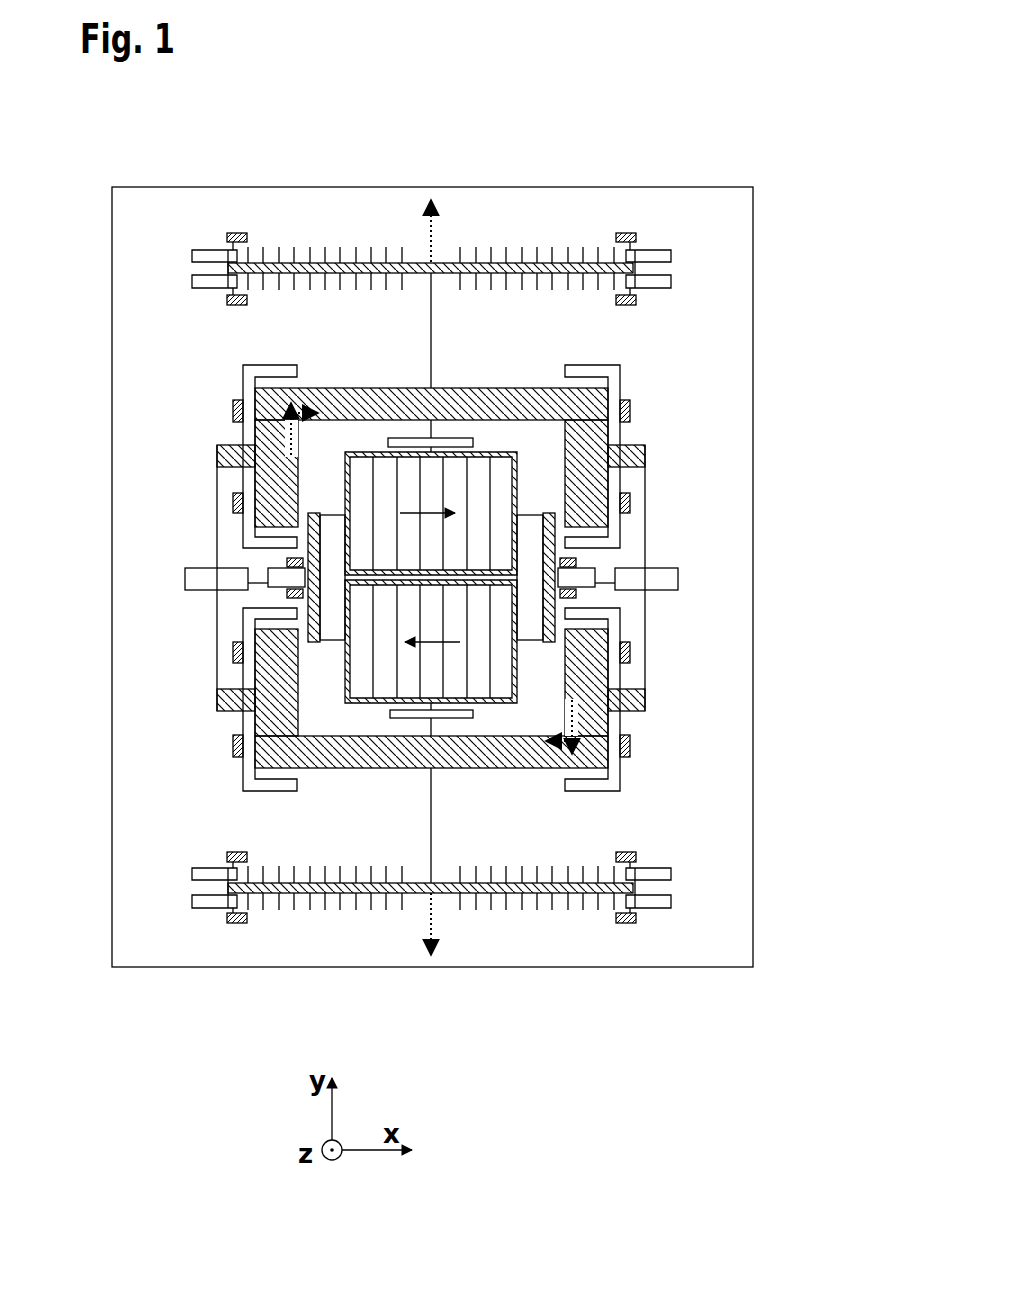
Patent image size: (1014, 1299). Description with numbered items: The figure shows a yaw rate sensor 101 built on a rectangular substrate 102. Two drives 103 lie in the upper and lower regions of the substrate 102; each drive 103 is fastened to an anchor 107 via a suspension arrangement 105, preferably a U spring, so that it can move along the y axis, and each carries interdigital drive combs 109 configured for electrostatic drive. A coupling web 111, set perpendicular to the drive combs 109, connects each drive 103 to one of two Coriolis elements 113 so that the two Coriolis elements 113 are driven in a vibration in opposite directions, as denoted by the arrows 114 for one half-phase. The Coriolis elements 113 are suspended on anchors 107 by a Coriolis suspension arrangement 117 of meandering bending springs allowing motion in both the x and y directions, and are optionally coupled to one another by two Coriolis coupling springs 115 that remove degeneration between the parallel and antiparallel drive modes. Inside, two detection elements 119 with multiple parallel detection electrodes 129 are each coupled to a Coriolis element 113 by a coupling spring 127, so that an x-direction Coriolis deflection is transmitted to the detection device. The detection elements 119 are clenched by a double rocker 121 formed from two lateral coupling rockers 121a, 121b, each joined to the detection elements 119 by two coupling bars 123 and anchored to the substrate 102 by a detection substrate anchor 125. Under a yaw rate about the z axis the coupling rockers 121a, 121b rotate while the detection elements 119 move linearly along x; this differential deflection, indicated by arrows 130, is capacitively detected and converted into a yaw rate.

The yaw rate sensor 101 is at (707, 128).
The substrate 102 is at (753, 198).
The drive 103 is at (230, 268).
The suspension arrangement 105 is at (193, 250).
The anchor 107 is at (237, 233).
The drive comb 109 is at (263, 250).
The coupling web 111 is at (440, 330).
The Coriolis element 113 is at (400, 388).
The arrows 114 is at (434, 232).
The Coriolis coupling spring 115 is at (187, 578).
The Coriolis suspension arrangement 117 is at (243, 380).
The detection element 119 is at (367, 452).
The double rocker 121 is at (608, 440).
The coupling rocker 121a is at (250, 552).
The coupling rocker 121b is at (622, 621).
The coupling bar 123 is at (258, 475).
The detection substrate anchor 125 is at (308, 622).
The coupling spring 127 is at (435, 510).
The detection electrode 129 is at (373, 665).
The arrows 130 is at (475, 442).